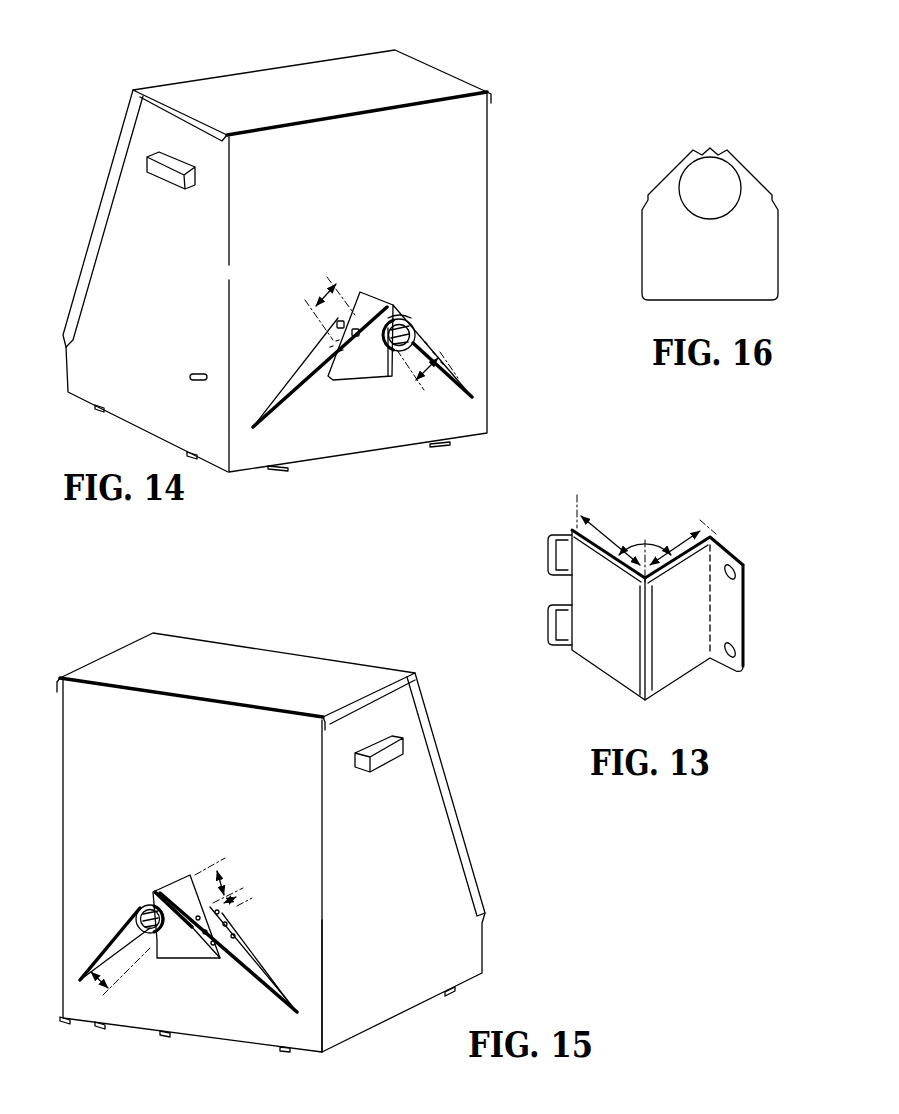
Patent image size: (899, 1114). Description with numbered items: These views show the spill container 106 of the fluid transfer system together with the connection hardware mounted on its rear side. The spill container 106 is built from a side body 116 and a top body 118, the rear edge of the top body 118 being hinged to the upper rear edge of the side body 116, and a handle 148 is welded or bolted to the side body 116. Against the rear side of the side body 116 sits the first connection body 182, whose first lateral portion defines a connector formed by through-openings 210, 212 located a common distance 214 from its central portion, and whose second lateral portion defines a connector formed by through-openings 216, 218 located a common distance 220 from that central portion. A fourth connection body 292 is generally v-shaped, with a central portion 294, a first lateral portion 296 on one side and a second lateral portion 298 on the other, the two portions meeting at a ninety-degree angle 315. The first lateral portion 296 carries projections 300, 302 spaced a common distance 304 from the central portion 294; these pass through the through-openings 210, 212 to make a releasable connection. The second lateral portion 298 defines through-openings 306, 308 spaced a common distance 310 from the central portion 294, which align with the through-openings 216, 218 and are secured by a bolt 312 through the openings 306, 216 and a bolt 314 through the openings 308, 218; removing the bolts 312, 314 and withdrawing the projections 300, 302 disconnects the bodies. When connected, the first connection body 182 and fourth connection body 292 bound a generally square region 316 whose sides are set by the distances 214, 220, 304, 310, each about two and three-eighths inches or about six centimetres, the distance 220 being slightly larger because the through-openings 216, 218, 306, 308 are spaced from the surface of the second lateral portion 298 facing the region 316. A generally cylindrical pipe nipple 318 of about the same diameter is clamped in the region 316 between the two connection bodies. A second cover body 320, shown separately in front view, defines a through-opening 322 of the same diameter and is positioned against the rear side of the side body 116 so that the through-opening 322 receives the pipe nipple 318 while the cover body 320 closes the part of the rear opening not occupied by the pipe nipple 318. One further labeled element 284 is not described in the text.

In FIG. 14, the spill container 106 is at (508, 82).
In FIG. 15, the spill container 106 is at (118, 628).
In FIG. 14, the side body 116 is at (470, 191).
In FIG. 15, the side body 116 is at (163, 715).
In FIG. 14, the top body 118 is at (268, 80).
In FIG. 15, the top body 118 is at (225, 663).
In FIG. 15, the handle 148 is at (393, 770).
In FIG. 14, the first connection body 182 is at (458, 370).
In FIG. 15, the first connection body 182 is at (280, 986).
In FIG. 14, the through-opening 210 is at (365, 300).
In FIG. 14, the through-opening 212 is at (348, 300).
In FIG. 14, the common distance 214 is at (312, 294).
In FIG. 14, the through-opening 216 is at (420, 320).
In FIG. 15, the through-opening 216 is at (192, 908).
In FIG. 15, the through-opening 218 is at (216, 900).
In FIG. 15, the common distance 220 is at (222, 870).
In FIG. 15, the blade base portion 284 is at (142, 965).
In FIG. 13, the fourth connection body 292 is at (637, 594).
In FIG. 13, the central portion 294 is at (648, 676).
In FIG. 14, the first lateral portion 296 is at (367, 374).
In FIG. 13, the first lateral portion 296 is at (608, 658).
In FIG. 13, the second lateral portion 298 is at (688, 655).
In FIG. 15, the second lateral portion 298 is at (188, 950).
In FIG. 14, the projection 300 is at (348, 362).
In FIG. 13, the projection 300 is at (545, 560).
In FIG. 14, the projection 302 is at (322, 378).
In FIG. 13, the projection 302 is at (545, 625).
In FIG. 13, the common distance 304 is at (590, 520).
In FIG. 15, the common distance 304 is at (93, 985).
In FIG. 13, the through-opening 306 is at (752, 565).
In FIG. 13, the through-opening 308 is at (752, 643).
In FIG. 14, the common distance 310 is at (430, 345).
In FIG. 13, the common distance 310 is at (689, 528).
In FIG. 14, the bolt 312 is at (425, 333).
In FIG. 15, the bolt 312 is at (198, 922).
In FIG. 15, the bolt 314 is at (214, 937).
In FIG. 13, the angle 315 is at (645, 548).
In FIG. 14, the region 316 is at (405, 352).
In FIG. 15, the region 316 is at (137, 897).
In FIG. 14, the pipe nipple 318 is at (395, 312).
In FIG. 15, the pipe nipple 318 is at (165, 903).
In FIG. 14, the second cover body 320 is at (373, 382).
In FIG. 16, the second cover body 320 is at (683, 161).
In FIG. 15, the second cover body 320 is at (176, 962).
In FIG. 16, the through-opening 322 is at (716, 186).